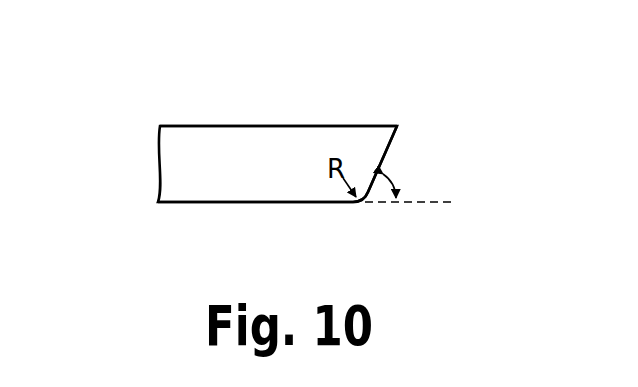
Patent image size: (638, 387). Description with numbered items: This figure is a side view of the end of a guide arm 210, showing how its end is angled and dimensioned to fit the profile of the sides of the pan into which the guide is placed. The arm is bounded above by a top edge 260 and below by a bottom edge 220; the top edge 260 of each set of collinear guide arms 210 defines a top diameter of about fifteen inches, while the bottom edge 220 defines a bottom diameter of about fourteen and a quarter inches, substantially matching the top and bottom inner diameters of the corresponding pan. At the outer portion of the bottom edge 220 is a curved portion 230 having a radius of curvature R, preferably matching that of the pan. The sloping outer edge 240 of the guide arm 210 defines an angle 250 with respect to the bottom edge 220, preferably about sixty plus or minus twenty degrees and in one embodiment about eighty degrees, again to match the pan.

The guide arm 210 is at (193, 95).
The bottom edge 220 is at (210, 203).
The curved portion 230 is at (357, 204).
The outer edge 240 is at (388, 148).
The angle 250 is at (394, 178).
The top edge 260 is at (266, 126).